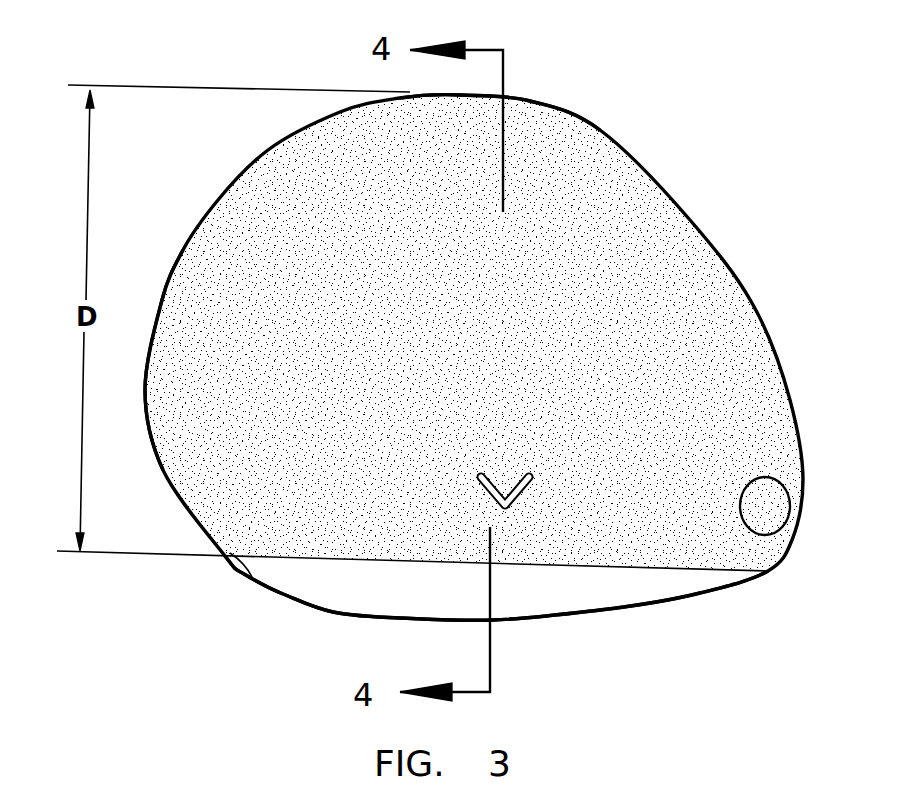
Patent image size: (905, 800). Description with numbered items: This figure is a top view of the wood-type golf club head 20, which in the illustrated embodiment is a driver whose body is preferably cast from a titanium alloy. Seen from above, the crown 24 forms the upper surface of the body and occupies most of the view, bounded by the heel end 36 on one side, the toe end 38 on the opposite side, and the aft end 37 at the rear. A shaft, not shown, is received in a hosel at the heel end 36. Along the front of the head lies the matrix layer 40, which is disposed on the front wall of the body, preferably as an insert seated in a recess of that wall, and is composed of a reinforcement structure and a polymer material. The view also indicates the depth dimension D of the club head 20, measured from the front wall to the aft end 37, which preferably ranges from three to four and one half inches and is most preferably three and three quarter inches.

The golf club head 20 is at (712, 160).
The crown 24 is at (537, 160).
The heel end 36 is at (848, 380).
The aft end 37 is at (540, 85).
The toe end 38 is at (42, 335).
The matrix layer 40 is at (332, 614).